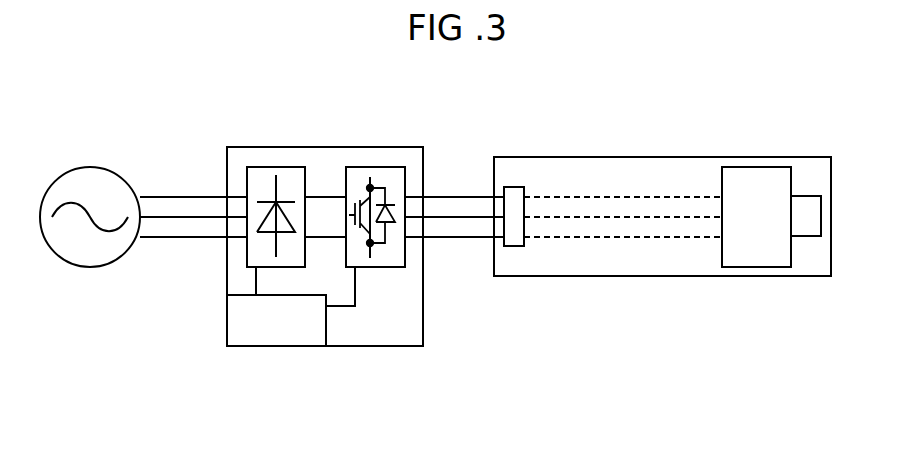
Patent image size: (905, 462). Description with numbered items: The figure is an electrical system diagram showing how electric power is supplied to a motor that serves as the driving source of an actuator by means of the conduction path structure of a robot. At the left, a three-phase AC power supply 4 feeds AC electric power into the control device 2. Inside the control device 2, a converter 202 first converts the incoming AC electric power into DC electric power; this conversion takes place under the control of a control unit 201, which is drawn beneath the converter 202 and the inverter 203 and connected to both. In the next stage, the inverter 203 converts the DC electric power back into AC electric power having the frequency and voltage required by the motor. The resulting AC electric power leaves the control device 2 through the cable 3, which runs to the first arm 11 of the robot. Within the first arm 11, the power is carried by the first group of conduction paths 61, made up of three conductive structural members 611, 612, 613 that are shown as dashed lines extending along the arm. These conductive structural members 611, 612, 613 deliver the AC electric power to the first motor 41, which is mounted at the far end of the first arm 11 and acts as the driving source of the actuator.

The three-phase AC power supply 4 is at (92, 167).
The control device 2 is at (318, 147).
The converter 202 is at (261, 167).
The inverter 203 is at (375, 167).
The control unit 201 is at (282, 339).
The cable 3 is at (443, 237).
The first arm 11 is at (510, 157).
The first group of conduction paths 61 is at (623, 157).
The conductive structural member 611 is at (552, 197).
The conductive structural member 612 is at (605, 217).
The conductive structural member 613 is at (545, 116).
The first motor 41 is at (755, 167).